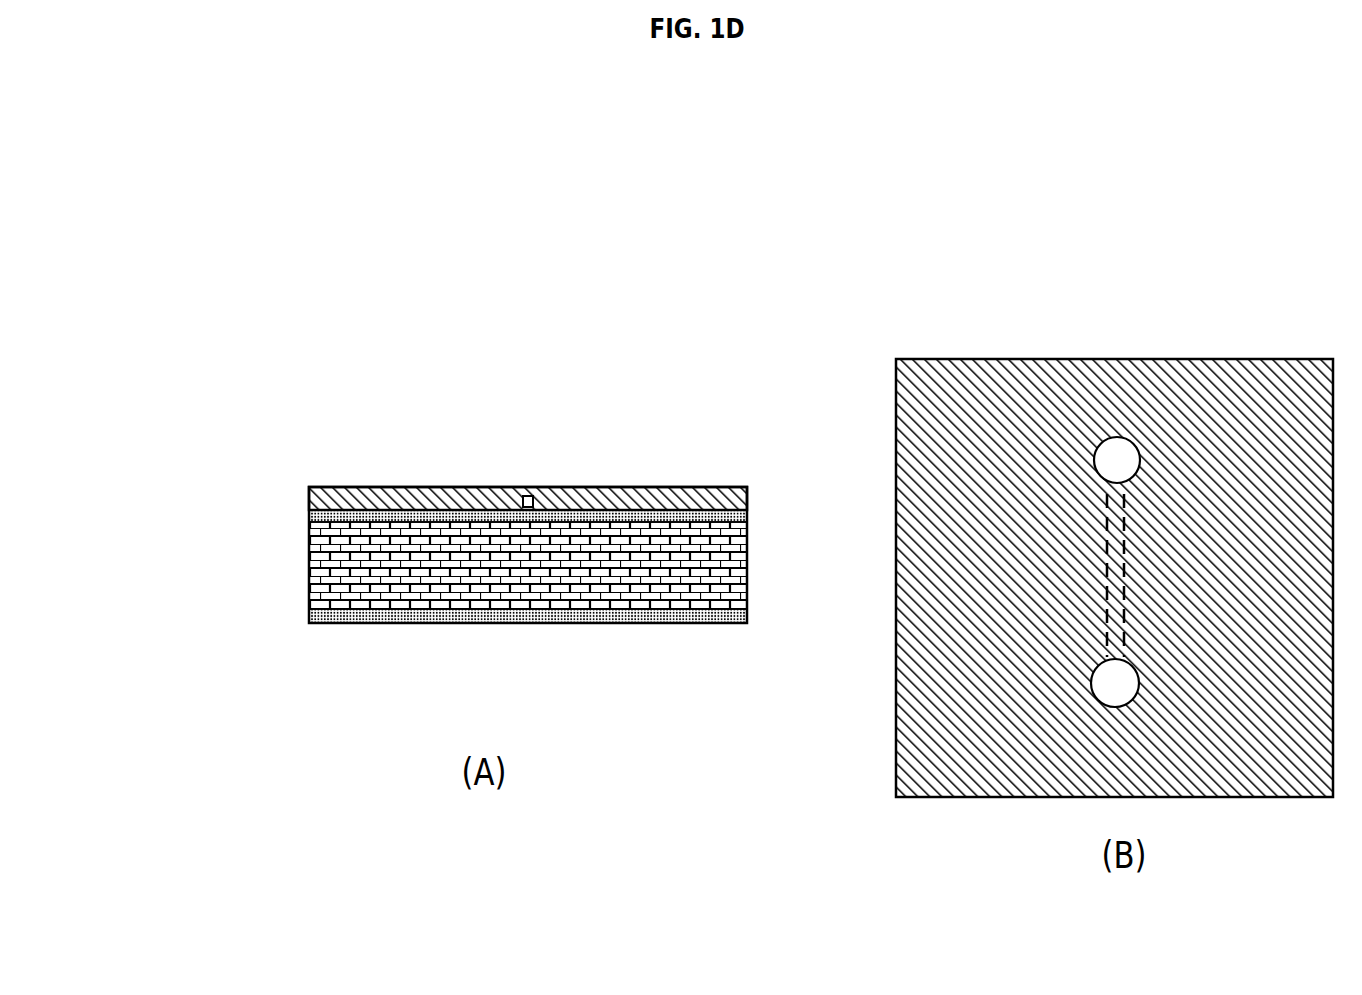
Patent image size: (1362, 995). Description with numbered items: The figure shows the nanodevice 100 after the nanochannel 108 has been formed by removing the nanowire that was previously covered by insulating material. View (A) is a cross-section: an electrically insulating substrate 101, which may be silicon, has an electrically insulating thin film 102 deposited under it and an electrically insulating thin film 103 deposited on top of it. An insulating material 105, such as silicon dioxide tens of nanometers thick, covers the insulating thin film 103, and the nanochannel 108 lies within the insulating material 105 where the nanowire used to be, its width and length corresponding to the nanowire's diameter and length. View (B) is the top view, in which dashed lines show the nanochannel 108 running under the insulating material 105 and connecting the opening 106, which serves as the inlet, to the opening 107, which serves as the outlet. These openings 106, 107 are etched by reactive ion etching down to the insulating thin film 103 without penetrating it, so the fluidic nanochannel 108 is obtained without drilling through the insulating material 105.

The nanodevice 100 is at (416, 190).
The insulating substrate 101 is at (317, 567).
The insulating thin film 102 is at (309, 616).
The insulating thin film 103 is at (309, 516).
The insulating material 105 is at (562, 497).
The opening 106 is at (1133, 452).
The opening 107 is at (1134, 691).
The nanochannel 108 is at (528, 488).